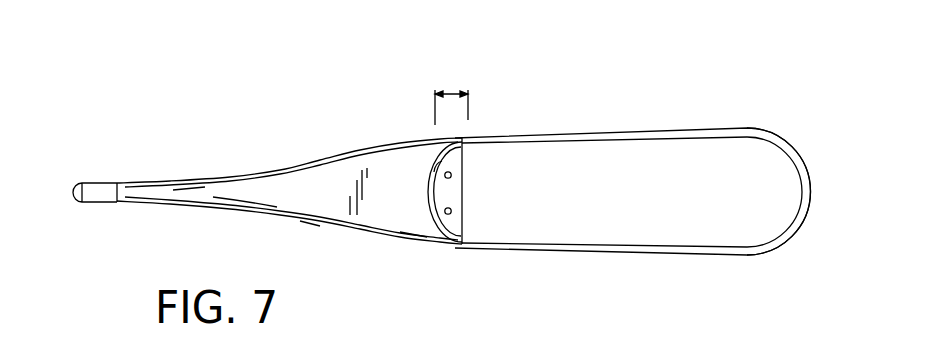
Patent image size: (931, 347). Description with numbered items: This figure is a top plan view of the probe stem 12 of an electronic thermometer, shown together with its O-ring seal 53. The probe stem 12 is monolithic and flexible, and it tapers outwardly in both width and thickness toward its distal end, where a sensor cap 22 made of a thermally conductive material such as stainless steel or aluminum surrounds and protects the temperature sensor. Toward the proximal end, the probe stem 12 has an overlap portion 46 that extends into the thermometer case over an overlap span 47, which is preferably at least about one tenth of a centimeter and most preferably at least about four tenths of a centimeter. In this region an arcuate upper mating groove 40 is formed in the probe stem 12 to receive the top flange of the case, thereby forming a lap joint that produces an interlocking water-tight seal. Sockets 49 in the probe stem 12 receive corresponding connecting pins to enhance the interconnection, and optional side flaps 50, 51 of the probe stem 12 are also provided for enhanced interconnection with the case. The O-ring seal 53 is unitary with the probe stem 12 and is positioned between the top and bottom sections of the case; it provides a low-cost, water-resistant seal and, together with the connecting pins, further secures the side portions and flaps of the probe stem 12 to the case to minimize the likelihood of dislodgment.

The probe stem 12 is at (307, 223).
The sensor cap 22 is at (98, 188).
The upper mating groove 40 is at (467, 157).
The overlap portion 46 is at (462, 226).
The overlap span 47 is at (450, 93).
The sockets 49 is at (452, 210).
The side flap 50 is at (453, 137).
The side flap 51 is at (456, 246).
The O-ring seal 53 is at (784, 140).